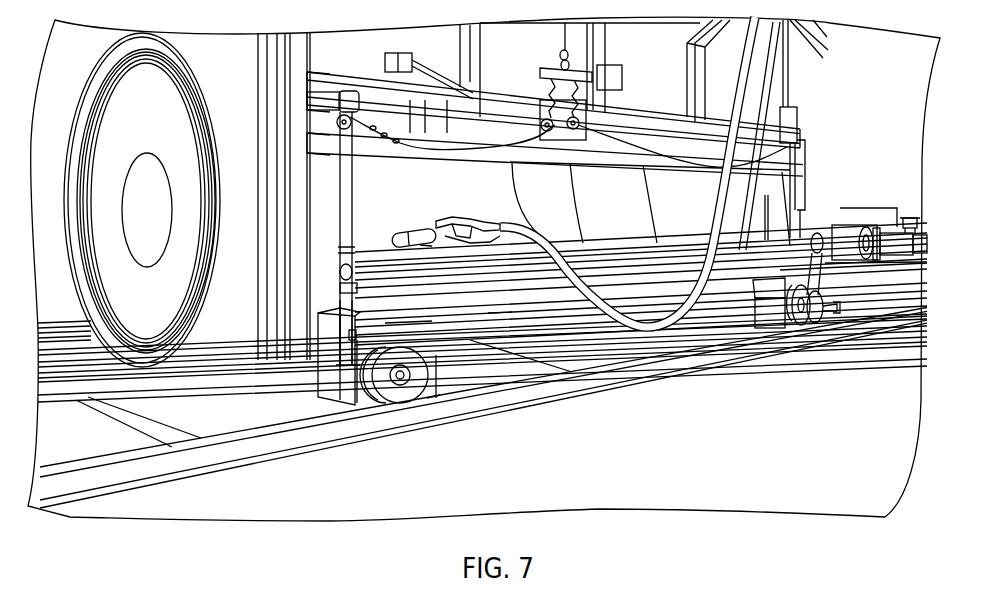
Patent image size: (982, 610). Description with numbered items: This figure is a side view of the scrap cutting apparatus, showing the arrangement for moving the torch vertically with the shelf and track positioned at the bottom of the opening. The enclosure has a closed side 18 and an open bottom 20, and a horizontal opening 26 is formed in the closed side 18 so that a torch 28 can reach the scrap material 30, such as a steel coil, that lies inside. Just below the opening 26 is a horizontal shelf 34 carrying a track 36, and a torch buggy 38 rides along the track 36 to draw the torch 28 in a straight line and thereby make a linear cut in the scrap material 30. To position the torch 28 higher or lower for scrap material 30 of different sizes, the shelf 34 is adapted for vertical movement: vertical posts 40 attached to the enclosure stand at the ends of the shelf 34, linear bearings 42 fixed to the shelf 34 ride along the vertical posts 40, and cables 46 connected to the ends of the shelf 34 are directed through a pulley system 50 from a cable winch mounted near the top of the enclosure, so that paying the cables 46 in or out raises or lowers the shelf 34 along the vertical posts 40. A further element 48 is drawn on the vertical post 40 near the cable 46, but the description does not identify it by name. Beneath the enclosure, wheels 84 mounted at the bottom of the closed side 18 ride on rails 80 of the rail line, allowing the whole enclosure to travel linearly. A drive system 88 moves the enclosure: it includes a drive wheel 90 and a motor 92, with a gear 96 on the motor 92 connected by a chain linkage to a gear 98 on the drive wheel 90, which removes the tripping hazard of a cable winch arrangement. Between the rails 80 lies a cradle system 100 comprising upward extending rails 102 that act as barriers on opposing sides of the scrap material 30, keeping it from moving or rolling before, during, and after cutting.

The closed side 18 is at (738, 65).
The open bottom 20 is at (273, 355).
The opening 26 is at (698, 213).
The torch 28 is at (425, 243).
The scrap material 30 is at (108, 250).
The horizontal shelf 34 is at (532, 292).
The track 36 is at (388, 280).
The torch buggy 38 is at (493, 263).
The vertical post 40 is at (350, 223).
The linear bearing 42 is at (346, 290).
The cable 46 is at (388, 138).
The cable clamp 48 is at (335, 266).
The pulley system 50 is at (553, 150).
The rail 80 is at (272, 450).
The wheel 84 is at (403, 400).
The drive system 88 is at (853, 173).
The drive wheel 90 is at (800, 325).
The motor 92 is at (848, 232).
The gear 96 is at (820, 235).
The gear 98 is at (818, 323).
The cradle system 100 is at (75, 350).
The rail 102 is at (58, 383).